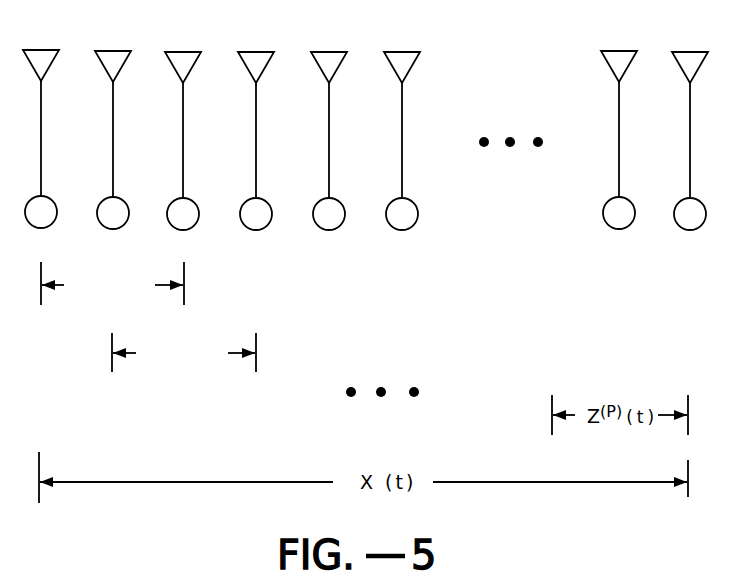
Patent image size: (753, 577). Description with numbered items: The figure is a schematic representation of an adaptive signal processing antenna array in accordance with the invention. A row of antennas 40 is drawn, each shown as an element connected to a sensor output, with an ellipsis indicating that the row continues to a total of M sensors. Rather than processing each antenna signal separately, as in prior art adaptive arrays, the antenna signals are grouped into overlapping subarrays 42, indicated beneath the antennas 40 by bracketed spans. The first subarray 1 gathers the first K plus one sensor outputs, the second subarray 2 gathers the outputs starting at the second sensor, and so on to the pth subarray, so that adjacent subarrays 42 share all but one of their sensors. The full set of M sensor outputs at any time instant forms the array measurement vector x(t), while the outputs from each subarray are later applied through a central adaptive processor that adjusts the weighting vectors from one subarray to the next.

The antennas 40 is at (256, 52).
The overlapping subarrays 42 is at (161, 317).
The first sub-array segment Z(1)(t) 1 is at (112, 283).
The second sub-array segment Z(2)(t) 2 is at (184, 352).